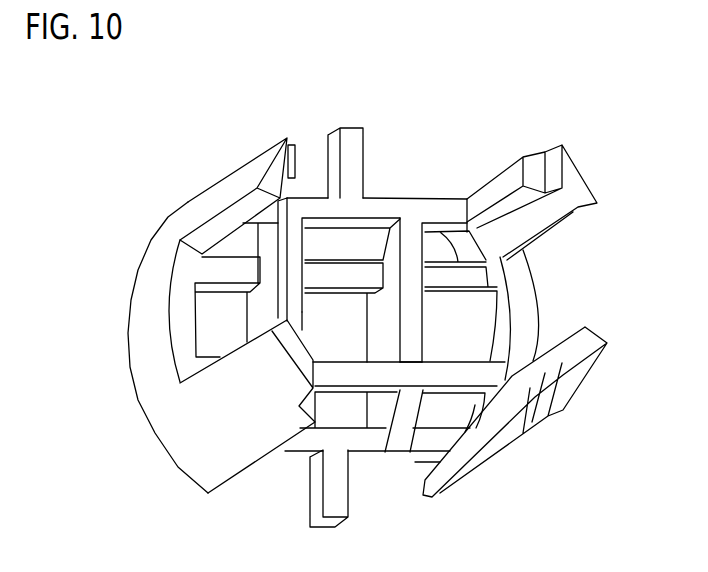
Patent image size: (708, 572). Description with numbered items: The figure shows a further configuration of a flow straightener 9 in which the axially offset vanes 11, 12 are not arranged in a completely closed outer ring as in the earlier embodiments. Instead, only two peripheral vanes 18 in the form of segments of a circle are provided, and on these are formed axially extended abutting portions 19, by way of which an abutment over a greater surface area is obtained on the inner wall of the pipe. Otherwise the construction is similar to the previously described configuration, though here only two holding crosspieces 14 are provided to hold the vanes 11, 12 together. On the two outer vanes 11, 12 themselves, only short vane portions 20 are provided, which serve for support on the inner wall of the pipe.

The flow straightener 9 is at (585, 125).
The vane 11 is at (382, 203).
The vane 12 is at (330, 277).
The holding crosspiece 14 is at (258, 313).
The peripheral vane 18 is at (517, 273).
The abutting portion 19 is at (225, 185).
The vane portion 20 is at (350, 140).